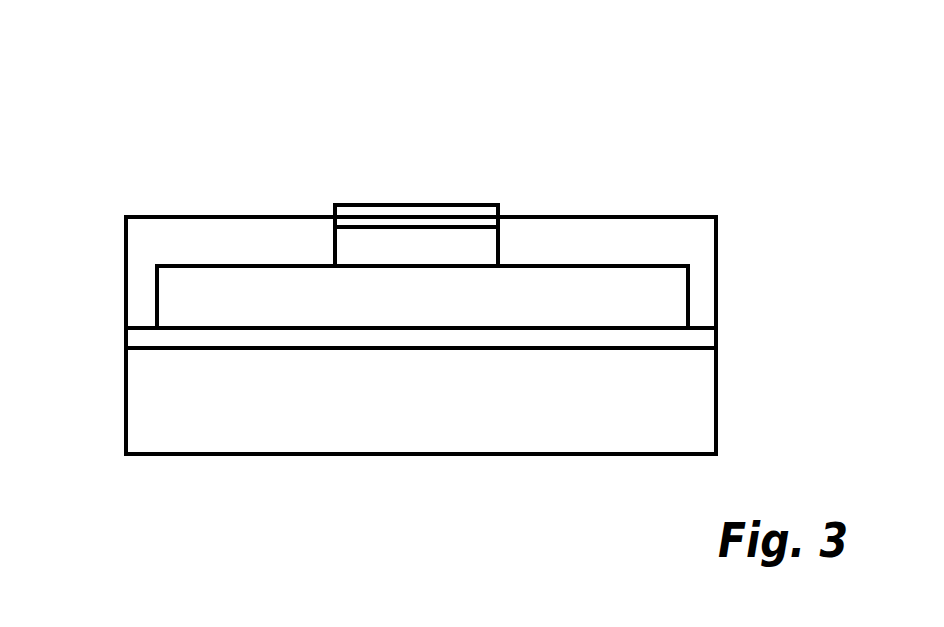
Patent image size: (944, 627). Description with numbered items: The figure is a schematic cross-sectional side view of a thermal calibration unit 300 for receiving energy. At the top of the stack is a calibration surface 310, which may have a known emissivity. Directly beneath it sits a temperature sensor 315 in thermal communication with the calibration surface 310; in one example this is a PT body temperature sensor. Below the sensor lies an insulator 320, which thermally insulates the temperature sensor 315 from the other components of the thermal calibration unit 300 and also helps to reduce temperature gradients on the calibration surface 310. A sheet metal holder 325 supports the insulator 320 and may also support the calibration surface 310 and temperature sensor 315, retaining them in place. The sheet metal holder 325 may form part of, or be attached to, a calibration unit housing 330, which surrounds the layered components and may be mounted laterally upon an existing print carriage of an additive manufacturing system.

The thermal calibration unit 300 is at (166, 85).
The calibration surface 310 is at (425, 205).
The temperature sensor 315 is at (498, 247).
The insulator 320 is at (692, 300).
The sheet metal holder 325 is at (720, 340).
The calibration unit housing 330 is at (720, 418).